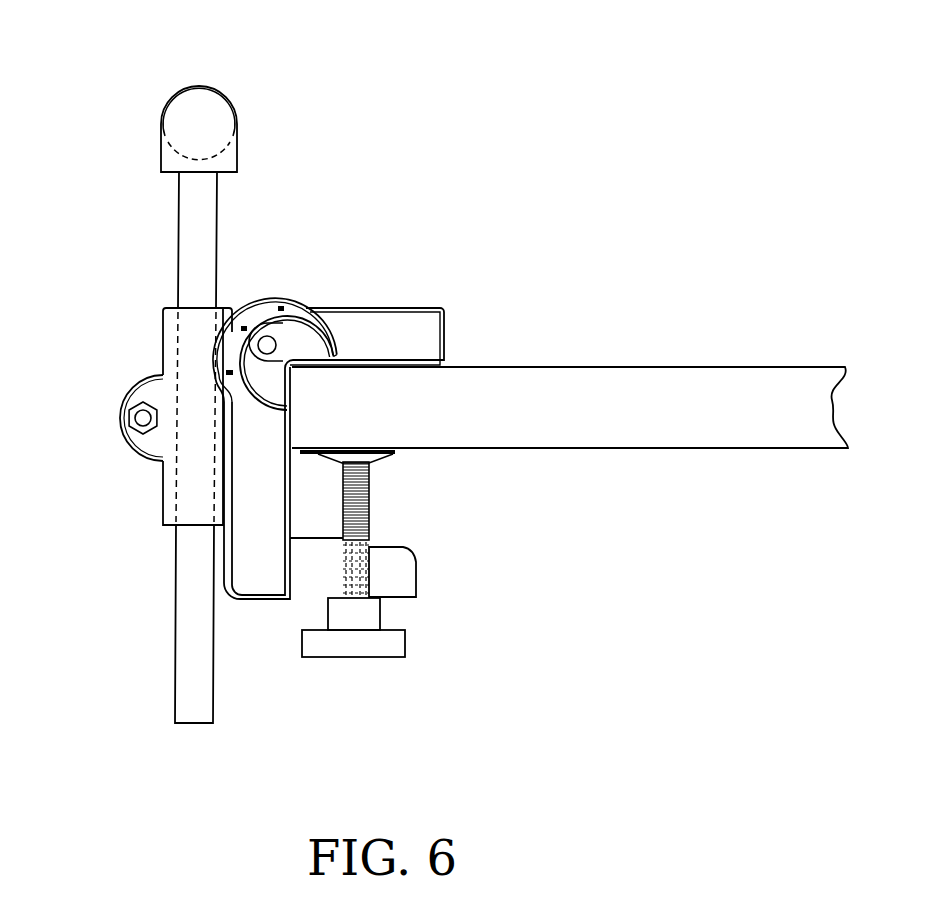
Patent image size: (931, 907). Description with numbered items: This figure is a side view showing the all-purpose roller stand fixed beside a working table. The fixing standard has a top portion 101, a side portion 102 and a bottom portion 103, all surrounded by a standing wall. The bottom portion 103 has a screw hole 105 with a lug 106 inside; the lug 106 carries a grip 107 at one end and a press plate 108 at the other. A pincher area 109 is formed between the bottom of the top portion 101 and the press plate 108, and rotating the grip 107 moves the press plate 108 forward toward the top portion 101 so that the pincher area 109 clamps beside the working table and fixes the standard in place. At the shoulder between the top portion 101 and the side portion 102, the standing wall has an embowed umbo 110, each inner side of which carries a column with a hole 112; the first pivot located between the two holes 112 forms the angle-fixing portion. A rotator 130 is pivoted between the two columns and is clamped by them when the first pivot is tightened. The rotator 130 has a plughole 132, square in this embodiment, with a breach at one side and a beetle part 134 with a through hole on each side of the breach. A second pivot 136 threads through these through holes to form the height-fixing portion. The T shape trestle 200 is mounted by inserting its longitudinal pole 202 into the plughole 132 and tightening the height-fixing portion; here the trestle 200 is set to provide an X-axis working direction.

The T shape trestle 200 is at (180, 82).
The longitudinal pole 202 is at (210, 218).
The rotator 130 is at (170, 348).
The plughole 132 is at (190, 502).
The beetle part 134 is at (132, 415).
The second pivot 136 is at (137, 423).
The embowed umbo 110 is at (283, 303).
The hole 112 is at (277, 345).
The top portion 101 is at (403, 364).
The pincher area 109 is at (387, 420).
The side portion 102 is at (288, 478).
The press plate 108 is at (388, 456).
The lug 106 is at (370, 517).
The bottom portion 103 is at (372, 541).
The screw hole 105 is at (362, 578).
The grip 107 is at (397, 648).